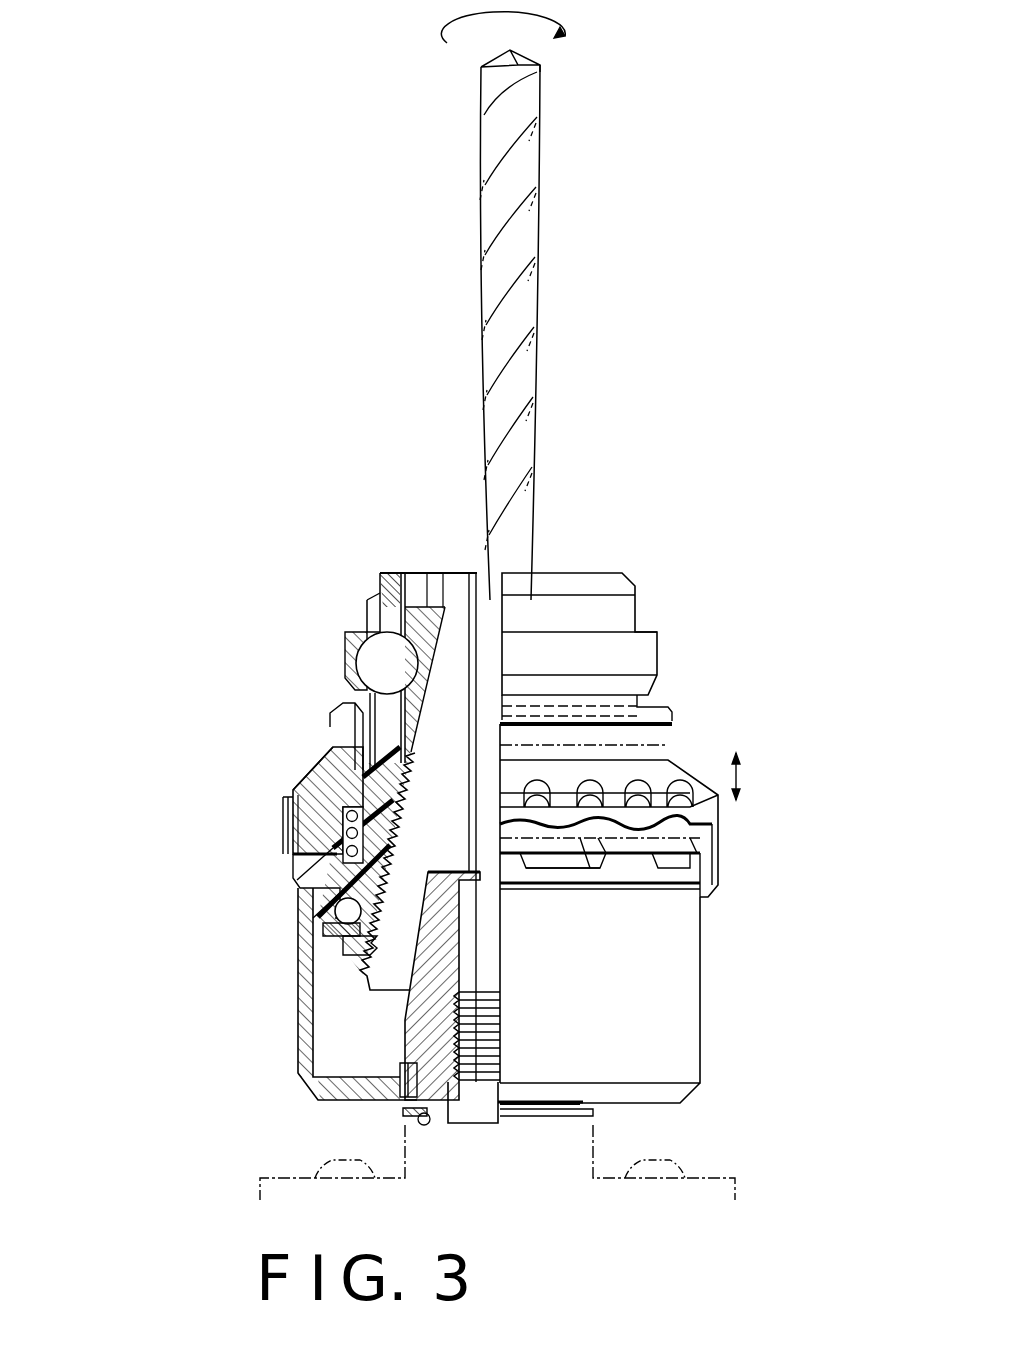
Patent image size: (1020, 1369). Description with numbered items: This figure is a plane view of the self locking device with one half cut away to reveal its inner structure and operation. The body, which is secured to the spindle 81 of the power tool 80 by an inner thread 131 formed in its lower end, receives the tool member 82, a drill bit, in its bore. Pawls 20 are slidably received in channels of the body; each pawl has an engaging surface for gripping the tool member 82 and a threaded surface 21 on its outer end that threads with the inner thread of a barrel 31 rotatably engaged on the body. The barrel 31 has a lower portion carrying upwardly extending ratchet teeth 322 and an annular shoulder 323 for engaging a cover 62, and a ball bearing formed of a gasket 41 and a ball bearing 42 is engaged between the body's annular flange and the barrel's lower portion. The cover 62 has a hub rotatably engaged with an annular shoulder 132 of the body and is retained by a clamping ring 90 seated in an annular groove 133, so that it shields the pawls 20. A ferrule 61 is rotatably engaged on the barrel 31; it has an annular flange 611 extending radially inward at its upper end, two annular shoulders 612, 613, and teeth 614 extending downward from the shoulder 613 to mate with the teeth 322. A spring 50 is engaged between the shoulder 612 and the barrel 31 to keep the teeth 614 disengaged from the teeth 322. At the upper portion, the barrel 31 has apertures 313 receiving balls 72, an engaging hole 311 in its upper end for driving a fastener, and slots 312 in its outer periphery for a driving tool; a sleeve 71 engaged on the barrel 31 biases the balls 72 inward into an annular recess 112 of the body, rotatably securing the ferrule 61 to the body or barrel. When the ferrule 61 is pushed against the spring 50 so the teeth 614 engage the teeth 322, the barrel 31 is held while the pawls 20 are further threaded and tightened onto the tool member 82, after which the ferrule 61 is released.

The tool member 82 is at (540, 226).
The barrel 31 is at (627, 613).
The engaging hole 311 is at (462, 587).
The slots 312 is at (370, 597).
The apertures 313 is at (378, 600).
The annular recess 112 is at (425, 600).
The sleeve 71 is at (345, 640).
The balls 72 is at (373, 668).
The pawls 20 is at (362, 700).
The annular flange 611 is at (440, 723).
The annular shoulder 612 is at (330, 763).
The spring 50 is at (343, 797).
The annular shoulder 613 is at (343, 818).
The teeth 322 is at (510, 865).
The annular shoulder 323 is at (312, 902).
The ball bearing 42 is at (335, 912).
The gasket 41 is at (330, 938).
The threaded surface 21 is at (350, 958).
The inner thread 131 is at (457, 1037).
The annular shoulder 132 is at (410, 1075).
The annular groove 133 is at (440, 1118).
The spindle 81 is at (472, 1108).
The ferrule 61 is at (680, 752).
The teeth 614 is at (612, 862).
The cover 62 is at (685, 1023).
The clamping ring 90 is at (597, 1113).
The power tool 80 is at (707, 1178).